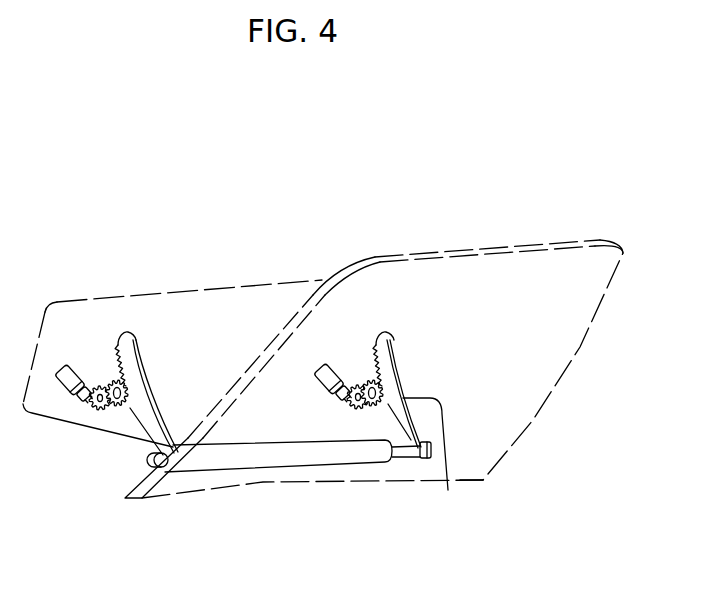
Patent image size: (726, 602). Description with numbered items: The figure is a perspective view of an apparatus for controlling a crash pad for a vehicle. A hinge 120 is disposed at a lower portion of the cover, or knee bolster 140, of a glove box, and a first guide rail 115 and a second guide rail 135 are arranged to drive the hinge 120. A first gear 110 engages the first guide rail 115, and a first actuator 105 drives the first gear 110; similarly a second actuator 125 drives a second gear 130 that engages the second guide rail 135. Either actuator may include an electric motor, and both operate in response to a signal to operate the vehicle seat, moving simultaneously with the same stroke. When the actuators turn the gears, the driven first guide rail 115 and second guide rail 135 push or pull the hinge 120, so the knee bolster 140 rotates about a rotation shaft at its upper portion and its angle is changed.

The first actuator 105 is at (62, 397).
The first gear 110 is at (92, 430).
The first guide rail 115 is at (130, 357).
The hinge 120 is at (267, 460).
The second actuator 125 is at (320, 400).
The second gear 130 is at (367, 428).
The second guide rail 135 is at (445, 477).
The knee bolster 140 is at (200, 490).